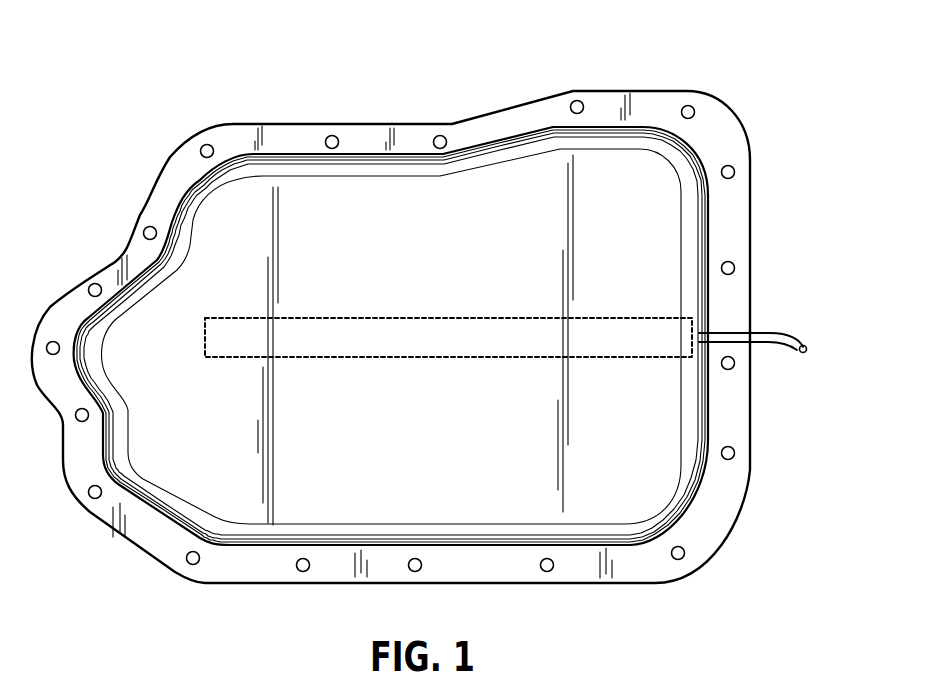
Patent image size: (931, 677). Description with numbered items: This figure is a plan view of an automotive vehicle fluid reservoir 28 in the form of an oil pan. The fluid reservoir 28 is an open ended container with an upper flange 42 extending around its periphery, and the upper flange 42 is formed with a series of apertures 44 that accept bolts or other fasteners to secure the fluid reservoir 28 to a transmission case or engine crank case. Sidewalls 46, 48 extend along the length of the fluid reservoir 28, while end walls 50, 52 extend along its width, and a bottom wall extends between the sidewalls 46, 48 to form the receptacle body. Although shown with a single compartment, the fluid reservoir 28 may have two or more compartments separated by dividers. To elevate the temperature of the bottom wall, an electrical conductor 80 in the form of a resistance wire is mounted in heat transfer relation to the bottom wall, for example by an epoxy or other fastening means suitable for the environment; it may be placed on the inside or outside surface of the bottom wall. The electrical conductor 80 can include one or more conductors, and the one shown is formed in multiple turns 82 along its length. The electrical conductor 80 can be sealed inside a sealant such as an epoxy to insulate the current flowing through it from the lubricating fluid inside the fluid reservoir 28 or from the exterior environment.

The fluid reservoir 28 is at (386, 97).
The upper flange 42 is at (648, 98).
The apertures 44 is at (735, 172).
The sidewall 46 is at (341, 528).
The sidewall 48 is at (297, 167).
The end wall 50 is at (148, 290).
The end wall 52 is at (697, 418).
The electrical conductor 80 is at (420, 338).
The turns 82 is at (773, 343).